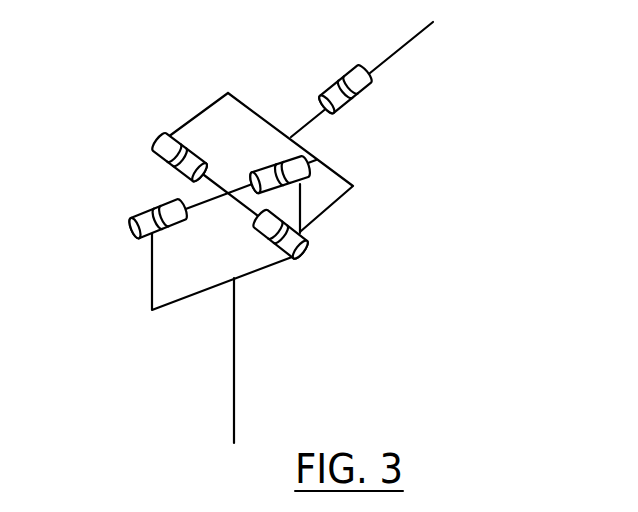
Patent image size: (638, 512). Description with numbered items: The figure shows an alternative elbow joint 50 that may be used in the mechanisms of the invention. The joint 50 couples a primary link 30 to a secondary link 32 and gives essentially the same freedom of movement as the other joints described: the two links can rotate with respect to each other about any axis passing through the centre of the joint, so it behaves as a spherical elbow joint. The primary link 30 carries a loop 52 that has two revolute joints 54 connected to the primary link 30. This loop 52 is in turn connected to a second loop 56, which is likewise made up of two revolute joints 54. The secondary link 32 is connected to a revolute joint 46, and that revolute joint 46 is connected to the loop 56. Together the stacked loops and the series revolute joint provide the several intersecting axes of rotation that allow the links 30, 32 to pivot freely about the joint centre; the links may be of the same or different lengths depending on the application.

The primary link 30 is at (235, 407).
The secondary link 32 is at (408, 44).
The revolute joint 46 is at (332, 83).
The joint 50 is at (417, 173).
The loop 52 is at (152, 267).
The revolute joints 54 is at (150, 135).
The loop 56 is at (339, 198).